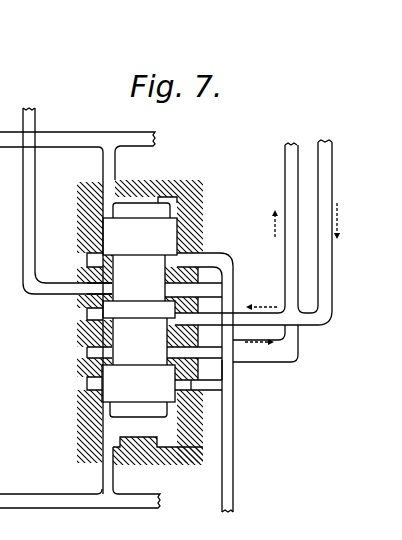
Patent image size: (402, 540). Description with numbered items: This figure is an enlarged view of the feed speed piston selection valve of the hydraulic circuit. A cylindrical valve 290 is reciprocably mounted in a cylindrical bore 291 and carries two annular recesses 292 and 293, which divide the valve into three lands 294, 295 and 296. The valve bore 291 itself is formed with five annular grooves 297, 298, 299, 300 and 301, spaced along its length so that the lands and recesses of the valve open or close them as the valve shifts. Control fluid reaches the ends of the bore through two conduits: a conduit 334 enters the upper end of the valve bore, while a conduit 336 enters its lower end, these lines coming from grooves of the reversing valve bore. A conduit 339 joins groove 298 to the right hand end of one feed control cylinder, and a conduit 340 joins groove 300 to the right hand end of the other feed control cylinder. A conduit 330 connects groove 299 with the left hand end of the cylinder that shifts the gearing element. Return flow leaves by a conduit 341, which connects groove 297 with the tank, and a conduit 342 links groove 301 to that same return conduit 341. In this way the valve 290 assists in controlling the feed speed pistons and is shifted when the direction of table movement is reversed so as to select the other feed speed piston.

The cylindrical valve 290 is at (137, 210).
The cylindrical bore 291 is at (173, 203).
The annular recess 292 is at (85, 264).
The annular recess 293 is at (82, 340).
The land 294 is at (163, 232).
The land 295 is at (88, 312).
The land 296 is at (117, 391).
The annular groove 297 is at (100, 237).
The annular groove 298 is at (187, 291).
The annular groove 299 is at (88, 320).
The annular groove 300 is at (82, 355).
The annular groove 301 is at (82, 384).
The conduit 330 is at (318, 155).
The conduit 334 is at (66, 137).
The conduit 336 is at (40, 503).
The conduit 339 is at (37, 181).
The conduit 340 is at (290, 177).
The conduit 341 is at (234, 462).
The conduit 342 is at (208, 390).